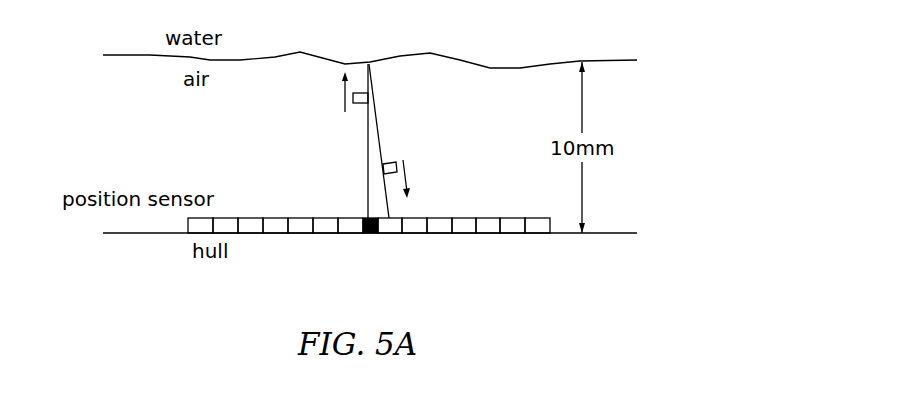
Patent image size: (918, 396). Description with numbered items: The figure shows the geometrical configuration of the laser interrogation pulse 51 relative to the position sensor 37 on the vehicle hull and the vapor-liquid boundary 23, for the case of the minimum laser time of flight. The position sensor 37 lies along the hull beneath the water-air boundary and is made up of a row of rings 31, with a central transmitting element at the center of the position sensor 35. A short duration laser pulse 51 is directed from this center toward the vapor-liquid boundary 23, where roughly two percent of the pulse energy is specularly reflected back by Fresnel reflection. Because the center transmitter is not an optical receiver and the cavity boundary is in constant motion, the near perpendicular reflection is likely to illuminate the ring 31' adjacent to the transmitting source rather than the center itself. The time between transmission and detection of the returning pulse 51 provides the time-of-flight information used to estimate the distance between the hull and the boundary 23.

The vapor-liquid boundary 23 is at (471, 61).
The ring 31 is at (369, 256).
The ring adjacent to the transmitting source 31' is at (411, 251).
The center of the position sensor 35 is at (368, 234).
The position sensor 37 is at (281, 240).
The laser interrogation pulse 51 is at (395, 162).